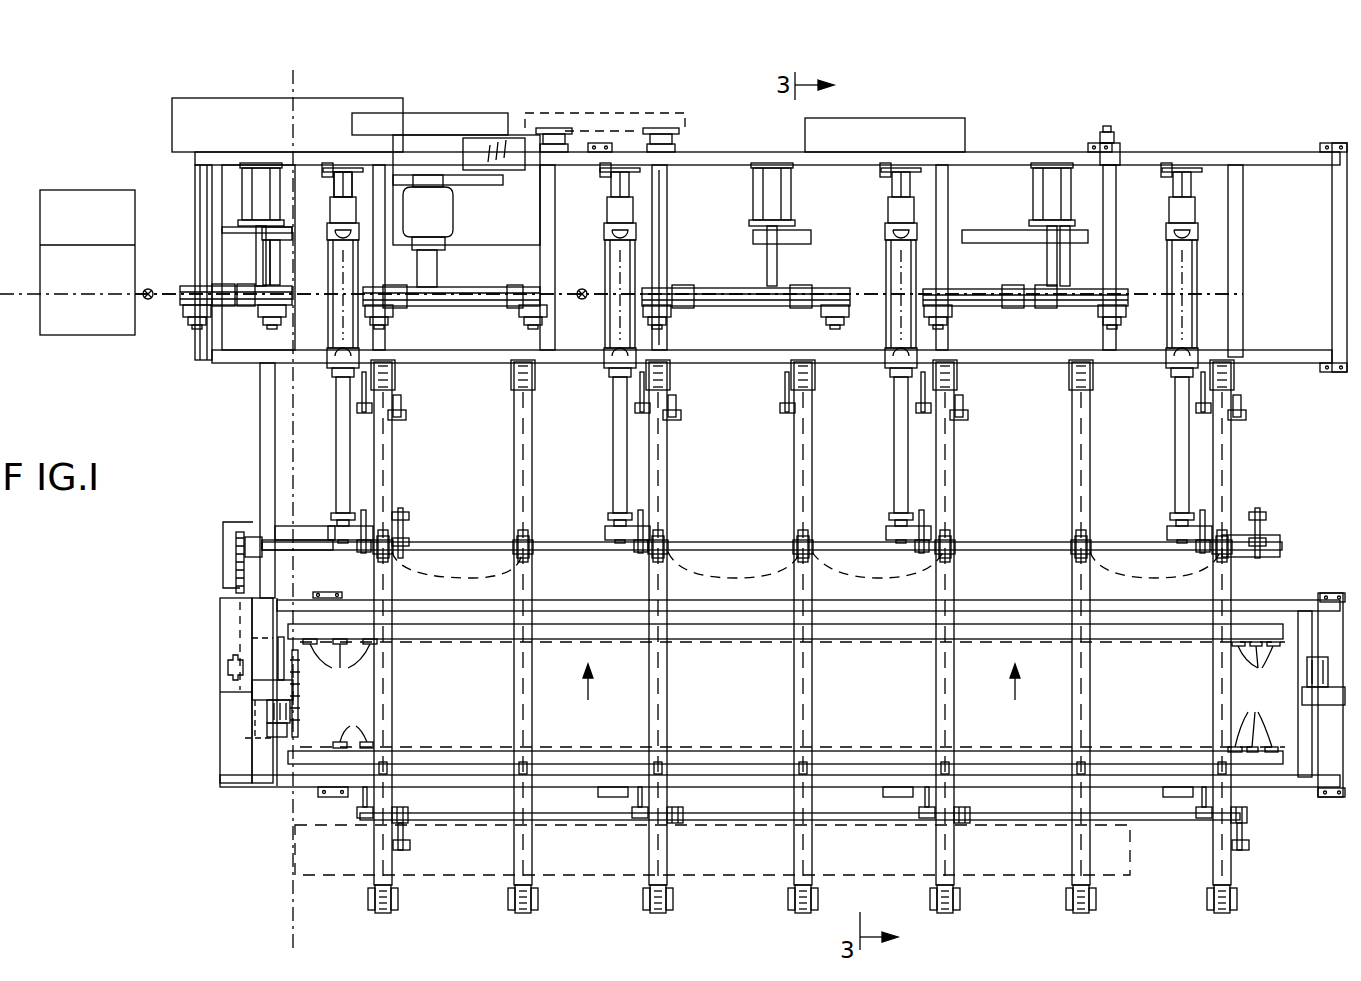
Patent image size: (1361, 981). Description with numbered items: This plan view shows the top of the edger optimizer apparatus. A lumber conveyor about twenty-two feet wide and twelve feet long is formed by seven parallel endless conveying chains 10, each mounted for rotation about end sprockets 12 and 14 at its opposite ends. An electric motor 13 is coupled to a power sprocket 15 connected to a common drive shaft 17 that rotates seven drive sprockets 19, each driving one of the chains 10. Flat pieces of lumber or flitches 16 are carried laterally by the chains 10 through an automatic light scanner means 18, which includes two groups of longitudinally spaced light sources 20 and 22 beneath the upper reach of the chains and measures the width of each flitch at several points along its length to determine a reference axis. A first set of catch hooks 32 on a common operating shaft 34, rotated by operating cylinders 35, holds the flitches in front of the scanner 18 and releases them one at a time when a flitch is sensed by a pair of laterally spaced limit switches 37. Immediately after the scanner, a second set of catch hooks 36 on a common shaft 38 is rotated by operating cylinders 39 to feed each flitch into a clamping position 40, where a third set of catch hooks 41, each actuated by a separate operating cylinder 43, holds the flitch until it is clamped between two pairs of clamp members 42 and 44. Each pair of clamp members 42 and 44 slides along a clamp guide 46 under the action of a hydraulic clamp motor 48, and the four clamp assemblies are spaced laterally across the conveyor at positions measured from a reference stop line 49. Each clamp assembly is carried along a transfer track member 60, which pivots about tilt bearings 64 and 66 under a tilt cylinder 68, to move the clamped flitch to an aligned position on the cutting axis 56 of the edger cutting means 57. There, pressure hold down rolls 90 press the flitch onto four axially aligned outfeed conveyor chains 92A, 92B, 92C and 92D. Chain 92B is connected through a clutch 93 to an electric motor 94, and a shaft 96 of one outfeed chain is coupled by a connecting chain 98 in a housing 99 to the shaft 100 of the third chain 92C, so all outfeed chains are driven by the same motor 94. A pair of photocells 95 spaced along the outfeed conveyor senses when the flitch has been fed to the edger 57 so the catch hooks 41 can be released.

The conveying chains 10 is at (514, 883).
The end sprockets 12 is at (520, 913).
The electric motor 13 is at (250, 738).
The end sprockets 14 is at (511, 377).
The power sprocket 15 is at (232, 548).
The flitches 16 is at (346, 875).
The common drive shaft 17 is at (318, 550).
The light scanner means 18 is at (750, 699).
The drive sprockets 19 is at (806, 568).
The light sources 20 is at (805, 720).
The light sources 22 is at (791, 664).
The first set of catch hooks 32 is at (362, 800).
The common operating shaft 34 is at (496, 813).
The operating cylinders 35 is at (410, 846).
The second set of catch hooks 36 is at (360, 520).
The limit switches 37 is at (400, 802).
The common shaft 38 is at (462, 542).
The operating cylinders 39 is at (408, 520).
The clamping position 40 is at (755, 461).
The third set of catch hooks 41 is at (362, 392).
The clamp members 42 is at (331, 232).
The operating cylinder 43 is at (406, 416).
The clamp members 44 is at (327, 362).
The clamp guide 46 is at (333, 282).
The hydraulic clamp motor 48 is at (334, 186).
The reference stop line 49 is at (293, 825).
The cutting axis 56 is at (160, 292).
The edger cutting means 57 is at (104, 190).
The transfer track member 60 is at (336, 470).
The tilt bearing 64 is at (345, 152).
The tilt bearing 66 is at (345, 555).
The tilt cylinder 68 is at (322, 170).
The pressure hold down rolls 90 is at (222, 310).
The first outfeed conveyor chain 92A is at (275, 308).
The second outfeed conveyor chain 92B is at (470, 300).
The third outfeed conveyor chain 92C is at (795, 308).
The fourth outfeed conveyor chain 92D is at (1068, 308).
The clutch 93 is at (463, 155).
The electric motor 94 is at (453, 208).
The photocells 95 is at (148, 300).
The shaft 96 is at (545, 195).
The connecting chain 98 is at (630, 128).
The housing 99 is at (448, 113).
The shaft 100 is at (660, 190).